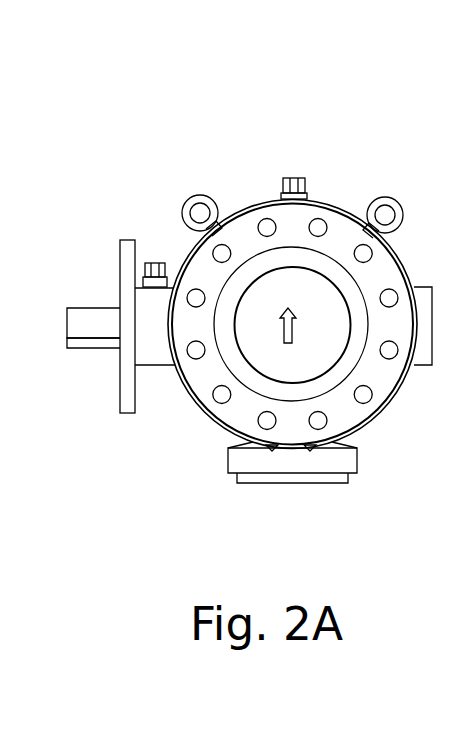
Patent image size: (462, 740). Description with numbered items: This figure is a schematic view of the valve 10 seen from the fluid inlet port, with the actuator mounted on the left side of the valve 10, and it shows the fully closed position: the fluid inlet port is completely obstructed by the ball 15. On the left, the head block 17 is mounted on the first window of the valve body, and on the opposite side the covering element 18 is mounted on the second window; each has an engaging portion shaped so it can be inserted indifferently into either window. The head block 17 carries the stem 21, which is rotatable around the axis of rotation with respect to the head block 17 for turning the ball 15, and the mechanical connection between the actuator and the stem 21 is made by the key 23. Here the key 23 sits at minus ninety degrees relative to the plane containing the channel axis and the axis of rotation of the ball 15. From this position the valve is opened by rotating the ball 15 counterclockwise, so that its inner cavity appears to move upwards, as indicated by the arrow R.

The valve 10 is at (337, 190).
The ball 15 is at (265, 298).
The arrow R is at (292, 335).
The covering element 18 is at (423, 297).
The head block 17 is at (152, 338).
The stem 21 is at (97, 318).
The key 23 is at (87, 343).